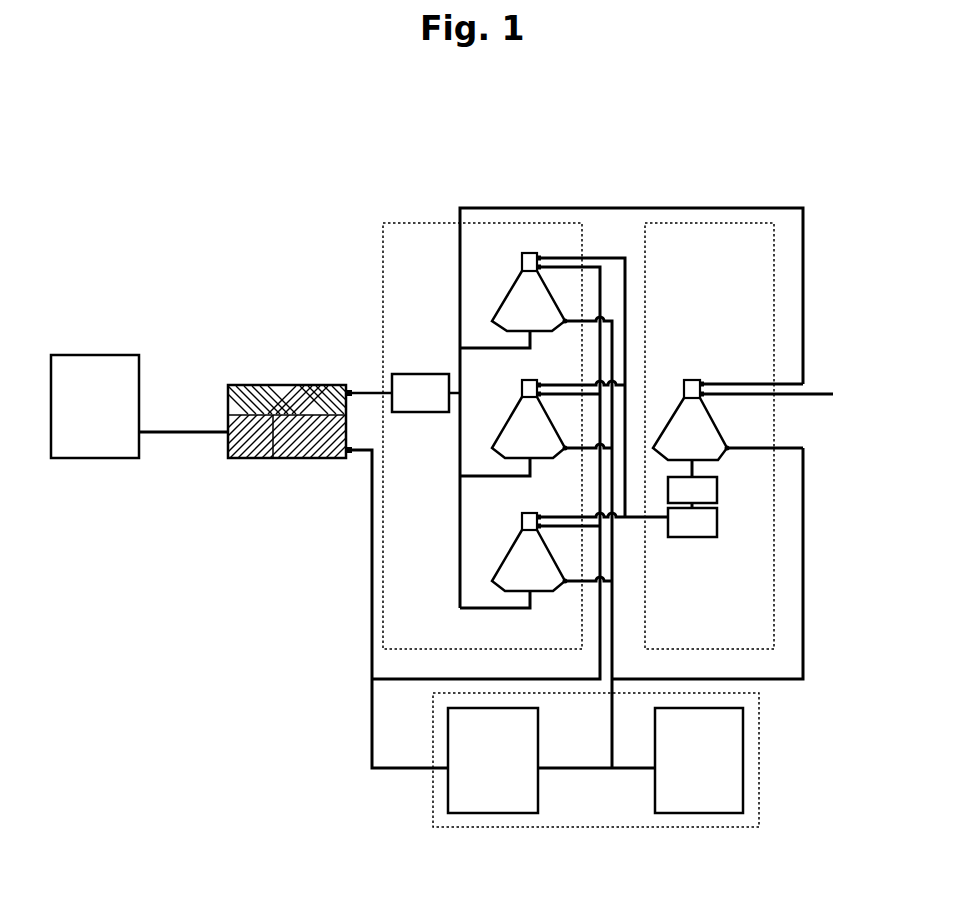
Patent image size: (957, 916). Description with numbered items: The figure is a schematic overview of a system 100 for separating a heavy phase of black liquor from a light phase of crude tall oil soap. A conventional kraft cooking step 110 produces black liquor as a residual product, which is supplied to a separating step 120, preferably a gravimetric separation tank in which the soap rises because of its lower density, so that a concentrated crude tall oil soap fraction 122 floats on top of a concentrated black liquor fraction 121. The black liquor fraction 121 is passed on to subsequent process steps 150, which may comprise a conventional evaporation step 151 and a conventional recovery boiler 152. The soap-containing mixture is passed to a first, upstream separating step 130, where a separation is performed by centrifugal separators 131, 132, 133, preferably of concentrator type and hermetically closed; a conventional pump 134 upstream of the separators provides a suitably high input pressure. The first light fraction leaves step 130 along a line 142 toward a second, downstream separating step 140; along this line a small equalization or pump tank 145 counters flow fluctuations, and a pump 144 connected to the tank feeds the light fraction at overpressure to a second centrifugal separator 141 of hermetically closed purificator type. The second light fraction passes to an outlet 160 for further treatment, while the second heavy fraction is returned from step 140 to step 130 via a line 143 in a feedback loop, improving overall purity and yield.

The system 100 is at (345, 175).
The cooking step 110 is at (139, 406).
The separating step 120 is at (292, 576).
The black liquor fraction 121 is at (317, 445).
The crude tall oil soap fraction 122 is at (273, 408).
The first separating step 130 is at (514, 222).
The centrifugal separator 131 is at (498, 510).
The centrifugal separator 132 is at (542, 428).
The centrifugal separator 133 is at (564, 560).
The pump 134 is at (426, 393).
The second separating step 140 is at (679, 222).
The second centrifugal separator 141 is at (728, 420).
The line 142 is at (695, 468).
The line 143 is at (803, 268).
The pump 144 is at (692, 492).
The equalization tank 145 is at (692, 522).
The subsequent process steps 150 is at (759, 717).
The evaporation step 151 is at (551, 760).
The recovery boiler 152 is at (699, 760).
The outlet 160 is at (786, 393).